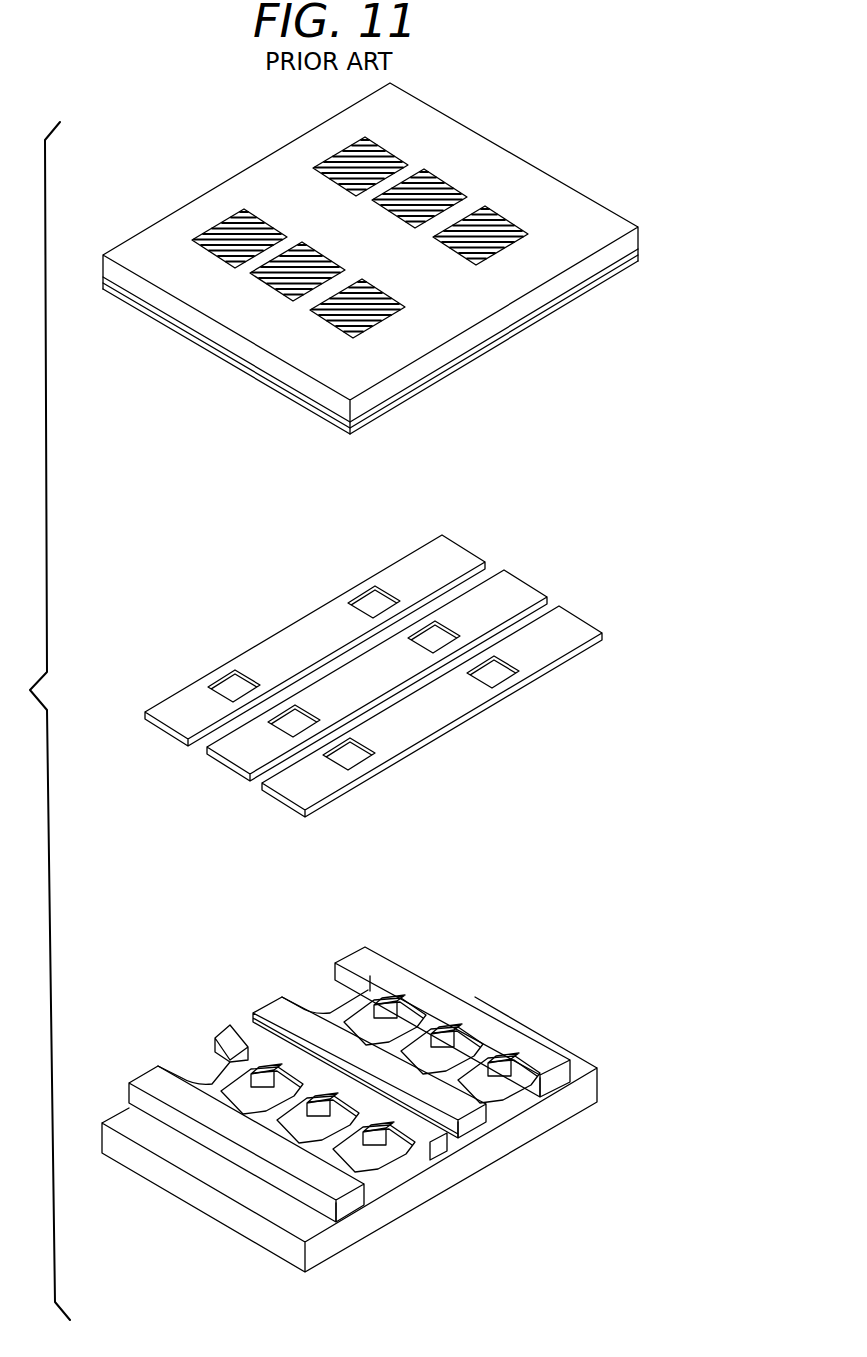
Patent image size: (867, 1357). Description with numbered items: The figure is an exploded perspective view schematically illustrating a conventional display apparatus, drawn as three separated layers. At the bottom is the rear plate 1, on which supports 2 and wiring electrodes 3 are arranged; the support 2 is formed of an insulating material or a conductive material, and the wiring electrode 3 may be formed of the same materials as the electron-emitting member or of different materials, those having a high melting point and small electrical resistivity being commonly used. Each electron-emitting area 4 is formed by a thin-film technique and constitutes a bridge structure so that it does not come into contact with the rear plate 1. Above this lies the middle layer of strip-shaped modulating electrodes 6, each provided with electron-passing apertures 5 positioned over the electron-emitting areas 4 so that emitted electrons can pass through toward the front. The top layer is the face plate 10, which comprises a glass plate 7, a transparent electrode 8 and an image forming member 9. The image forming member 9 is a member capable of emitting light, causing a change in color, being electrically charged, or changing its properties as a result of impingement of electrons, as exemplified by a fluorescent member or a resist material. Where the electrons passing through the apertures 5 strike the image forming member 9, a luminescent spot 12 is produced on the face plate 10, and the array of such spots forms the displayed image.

The rear plate 1 is at (130, 1160).
The support 2 is at (557, 1083).
The wiring electrode 3 is at (535, 1053).
The electron-emitting area 4 is at (377, 997).
The electron-passing aperture 5 is at (500, 670).
The modulating electrode 6 is at (572, 617).
The glass plate 7 is at (632, 237).
The transparent electrode 8 is at (637, 251).
The image forming member 9 is at (396, 347).
The face plate 10 is at (426, 258).
The luminescent spot 12 is at (503, 213).